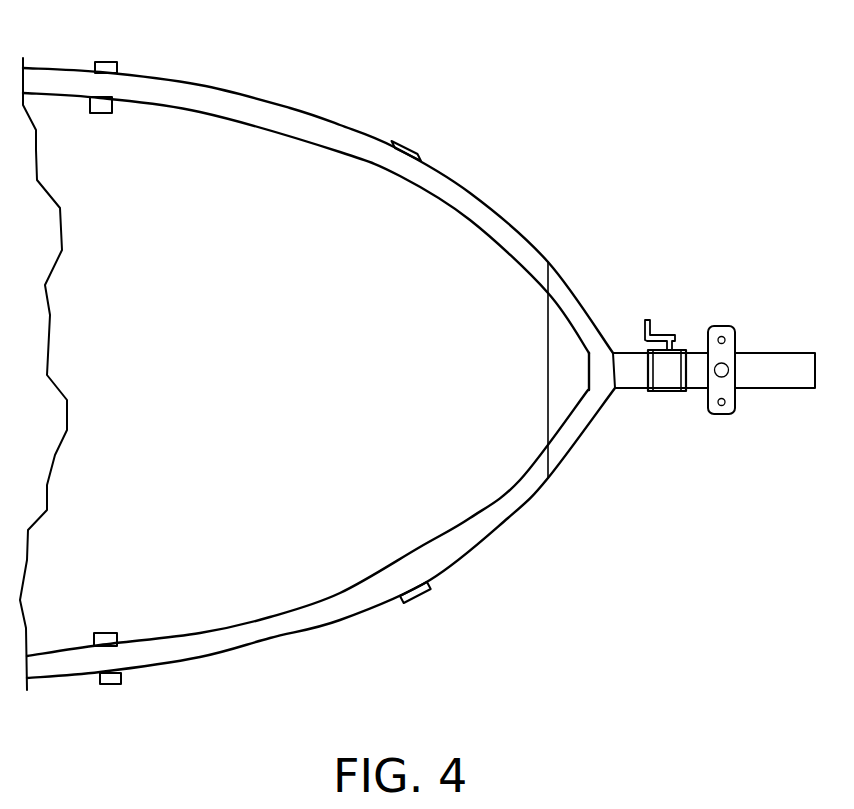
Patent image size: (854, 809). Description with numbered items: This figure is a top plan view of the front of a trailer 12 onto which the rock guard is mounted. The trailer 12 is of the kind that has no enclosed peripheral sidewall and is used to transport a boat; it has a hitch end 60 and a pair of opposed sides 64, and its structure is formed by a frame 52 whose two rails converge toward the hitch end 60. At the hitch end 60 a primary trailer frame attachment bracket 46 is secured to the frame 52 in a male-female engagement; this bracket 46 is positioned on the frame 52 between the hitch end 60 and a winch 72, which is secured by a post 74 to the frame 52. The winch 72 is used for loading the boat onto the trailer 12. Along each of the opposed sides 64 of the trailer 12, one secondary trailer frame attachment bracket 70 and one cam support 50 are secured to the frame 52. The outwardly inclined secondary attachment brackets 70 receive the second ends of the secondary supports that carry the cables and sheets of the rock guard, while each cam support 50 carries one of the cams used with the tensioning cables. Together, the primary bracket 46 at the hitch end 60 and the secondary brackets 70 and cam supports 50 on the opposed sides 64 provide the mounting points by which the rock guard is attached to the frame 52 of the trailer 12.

The trailer 12 is at (431, 372).
The primary trailer frame attachment bracket 46 is at (736, 340).
The cam support 50 is at (108, 61).
The frame 52 is at (505, 220).
The hitch end 60 is at (815, 370).
The opposed sides 64 is at (290, 108).
The secondary trailer frame attachment bracket 70 is at (412, 146).
The winch 72 is at (650, 320).
The post 74 is at (660, 392).